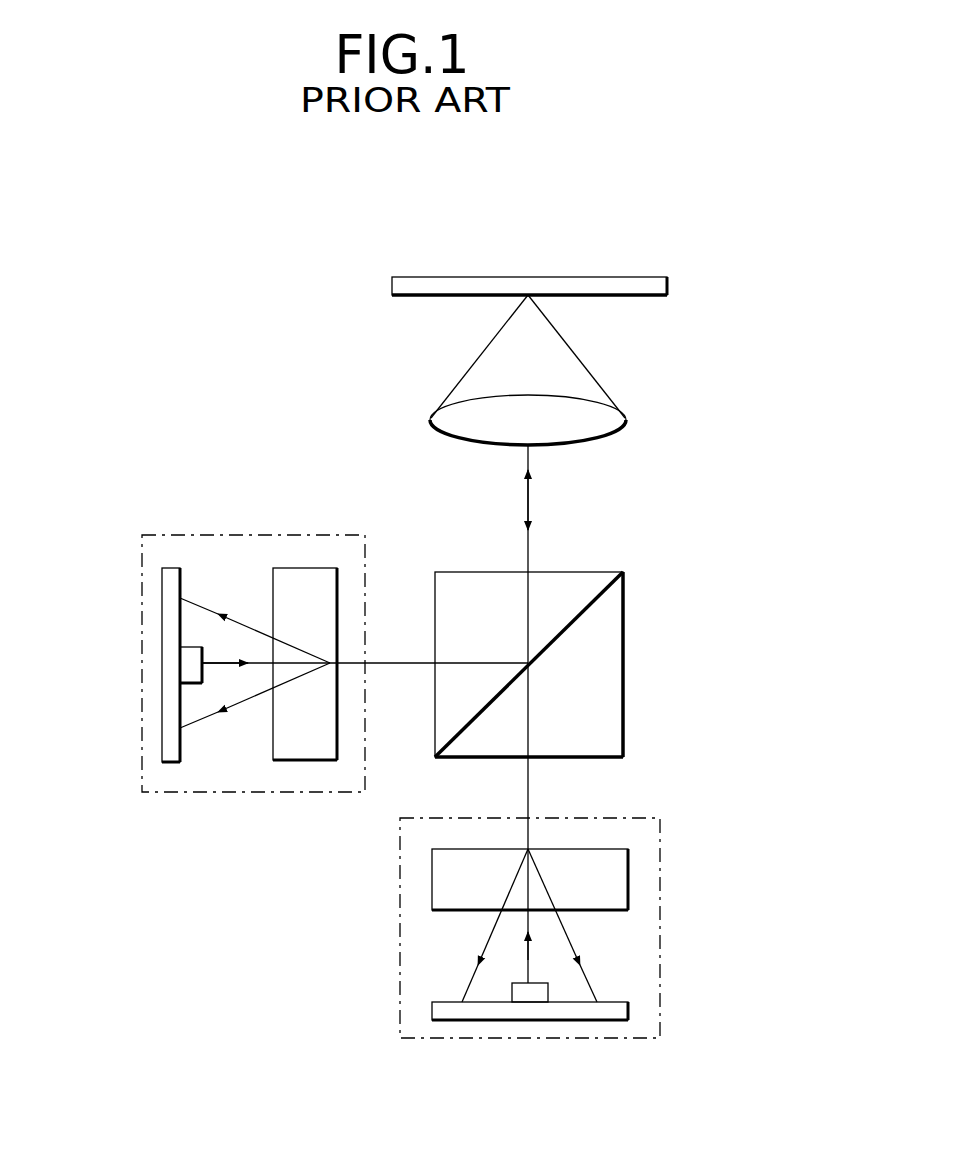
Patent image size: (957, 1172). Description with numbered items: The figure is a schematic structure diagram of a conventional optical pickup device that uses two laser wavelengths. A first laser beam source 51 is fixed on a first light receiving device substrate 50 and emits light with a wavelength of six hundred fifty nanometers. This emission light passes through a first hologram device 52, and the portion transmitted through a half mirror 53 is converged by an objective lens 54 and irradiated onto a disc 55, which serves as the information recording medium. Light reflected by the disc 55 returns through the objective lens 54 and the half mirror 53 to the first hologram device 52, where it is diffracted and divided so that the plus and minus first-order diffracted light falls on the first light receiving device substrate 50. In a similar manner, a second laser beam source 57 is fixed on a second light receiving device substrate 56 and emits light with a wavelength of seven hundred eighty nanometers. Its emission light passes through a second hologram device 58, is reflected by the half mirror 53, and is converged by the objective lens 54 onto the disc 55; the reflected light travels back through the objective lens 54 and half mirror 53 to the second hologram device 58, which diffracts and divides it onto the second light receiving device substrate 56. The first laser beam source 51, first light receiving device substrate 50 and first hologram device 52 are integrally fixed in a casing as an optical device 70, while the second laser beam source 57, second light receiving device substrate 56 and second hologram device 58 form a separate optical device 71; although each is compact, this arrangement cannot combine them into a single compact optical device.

The first light receiving device substrate 50 is at (626, 1008).
The first laser beam source 51 is at (527, 990).
The first hologram device 52 is at (617, 881).
The half mirror 53 is at (585, 608).
The objective lens 54 is at (600, 423).
The disc 55 is at (667, 286).
The second light receiving device substrate 56 is at (167, 566).
The second laser beam source 57 is at (188, 653).
The second hologram device 58 is at (301, 566).
The optical device 70 is at (400, 884).
The optical device 71 is at (240, 793).